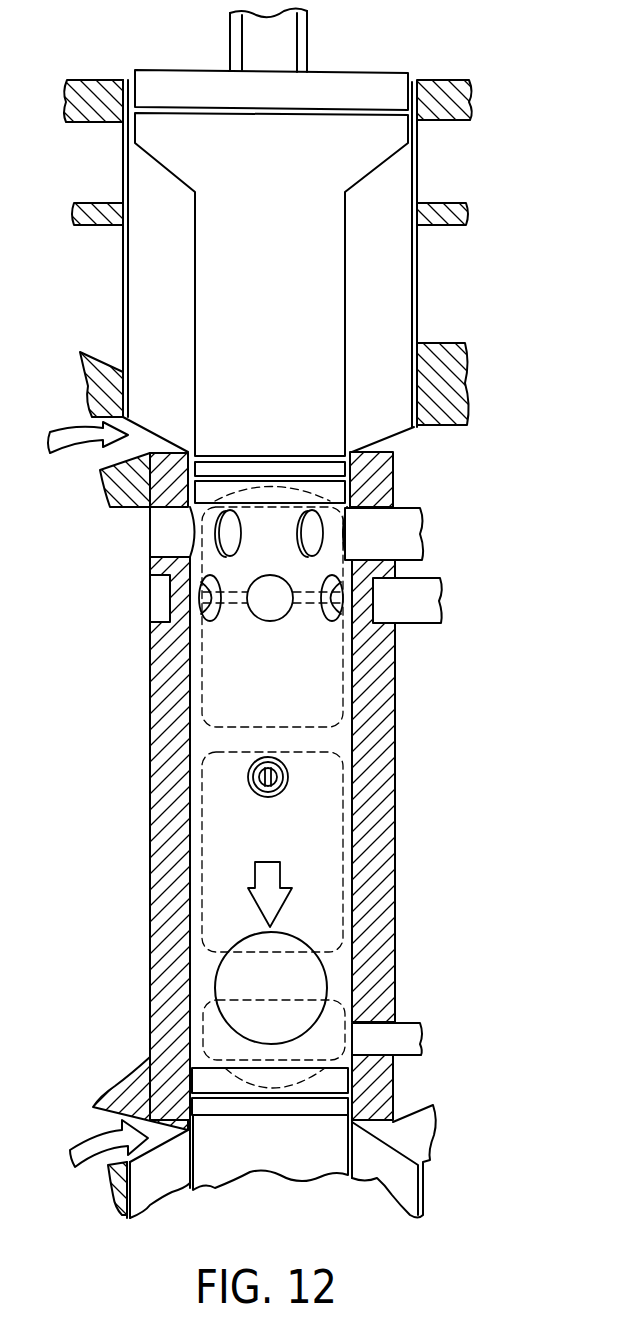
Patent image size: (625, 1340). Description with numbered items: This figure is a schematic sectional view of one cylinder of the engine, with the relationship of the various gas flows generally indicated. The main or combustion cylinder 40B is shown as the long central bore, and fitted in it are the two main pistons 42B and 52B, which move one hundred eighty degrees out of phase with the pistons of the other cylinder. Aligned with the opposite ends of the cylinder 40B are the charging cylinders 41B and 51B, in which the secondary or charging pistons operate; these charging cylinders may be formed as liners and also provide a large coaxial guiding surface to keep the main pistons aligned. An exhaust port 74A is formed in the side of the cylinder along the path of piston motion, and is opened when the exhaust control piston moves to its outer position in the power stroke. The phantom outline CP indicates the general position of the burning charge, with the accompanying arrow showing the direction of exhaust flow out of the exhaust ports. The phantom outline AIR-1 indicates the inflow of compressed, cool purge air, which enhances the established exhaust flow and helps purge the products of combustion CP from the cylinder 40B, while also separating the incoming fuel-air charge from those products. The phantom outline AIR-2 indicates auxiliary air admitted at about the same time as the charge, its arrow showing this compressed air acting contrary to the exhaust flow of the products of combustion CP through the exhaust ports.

The charging cylinder 51B is at (140, 292).
The main piston 52B is at (290, 313).
The main or combustion cylinder 40B is at (150, 800).
The main piston (exhaust control piston) 42B is at (293, 1163).
The charging cylinder 41B is at (374, 1174).
The exhaust port 74A is at (278, 940).
The purge air (phantom outline) AIR-1 is at (343, 650).
The burning charge / products of combustion (phantom outline) CP is at (345, 763).
The auxiliary air (phantom outline) AIR-2 is at (343, 1003).